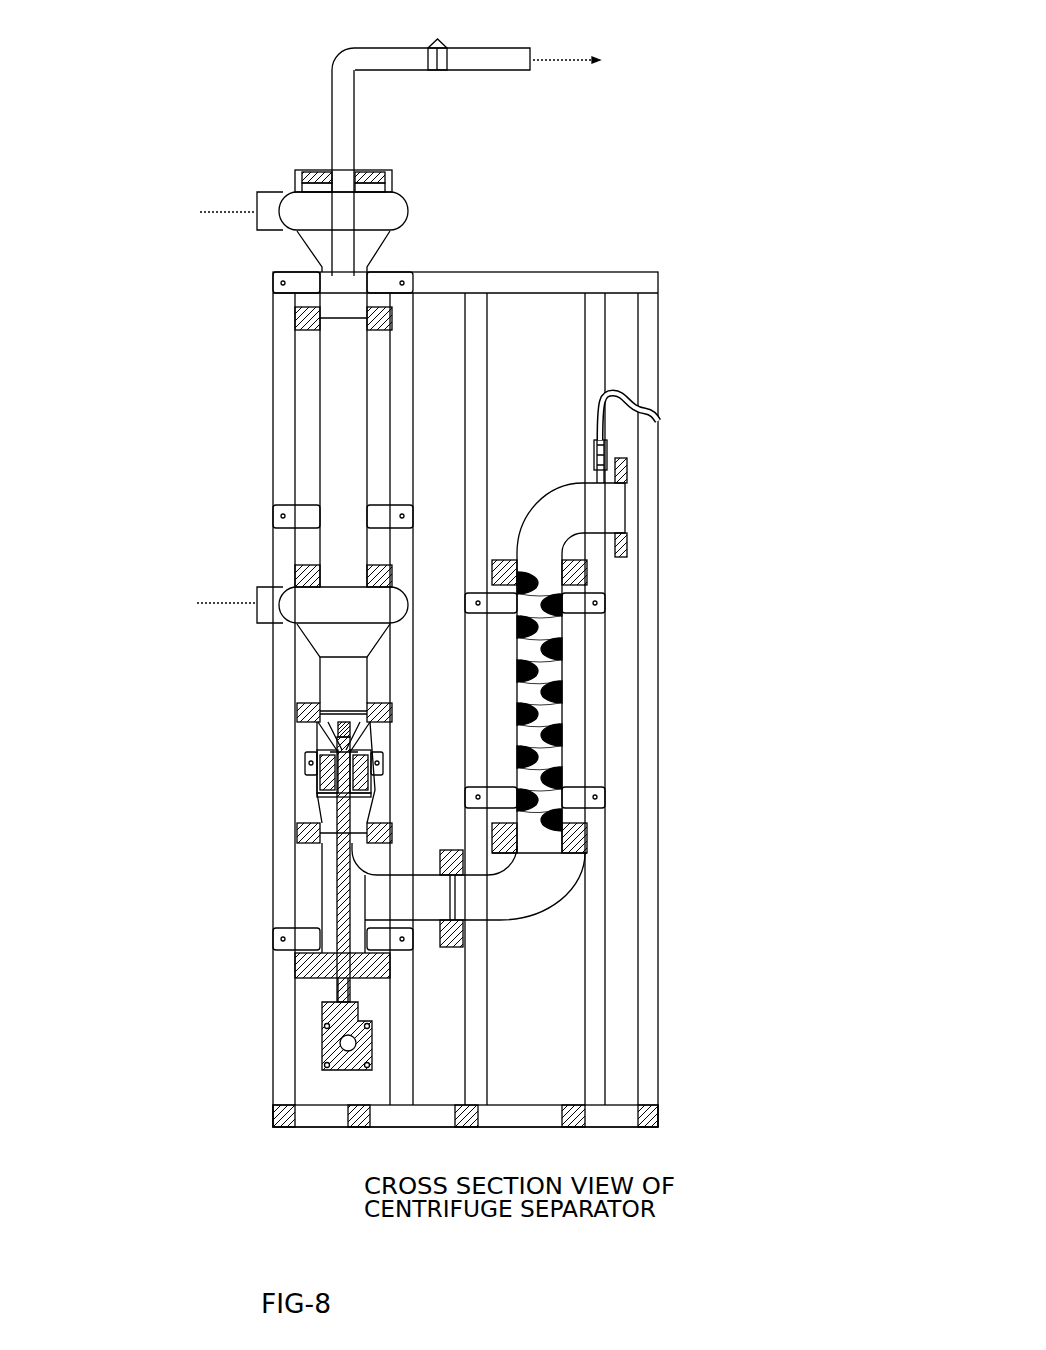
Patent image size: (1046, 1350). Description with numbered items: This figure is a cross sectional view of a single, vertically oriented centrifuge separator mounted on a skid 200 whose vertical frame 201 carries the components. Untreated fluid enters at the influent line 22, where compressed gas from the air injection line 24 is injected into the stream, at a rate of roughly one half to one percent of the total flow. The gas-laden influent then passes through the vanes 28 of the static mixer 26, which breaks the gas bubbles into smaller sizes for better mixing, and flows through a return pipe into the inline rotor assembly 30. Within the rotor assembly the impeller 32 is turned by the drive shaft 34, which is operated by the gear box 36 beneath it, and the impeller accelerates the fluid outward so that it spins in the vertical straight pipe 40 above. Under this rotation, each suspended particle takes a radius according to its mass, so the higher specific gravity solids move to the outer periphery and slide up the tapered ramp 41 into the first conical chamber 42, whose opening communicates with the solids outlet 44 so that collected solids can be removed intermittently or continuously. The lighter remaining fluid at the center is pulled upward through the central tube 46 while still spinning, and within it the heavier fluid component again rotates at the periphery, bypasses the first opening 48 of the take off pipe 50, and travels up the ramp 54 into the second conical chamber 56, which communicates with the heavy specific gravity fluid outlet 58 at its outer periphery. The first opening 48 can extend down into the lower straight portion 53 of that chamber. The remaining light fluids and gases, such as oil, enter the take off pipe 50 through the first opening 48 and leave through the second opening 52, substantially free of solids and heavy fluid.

The influent line 22 is at (640, 508).
The air injection line 24 is at (653, 402).
The static mixer 26 is at (575, 668).
The vanes 28 is at (565, 655).
The rotor assembly 30 is at (302, 807).
The impeller 32 is at (320, 732).
The drive shaft 34 is at (325, 866).
The gear box 36 is at (315, 1051).
The straight pipe 40 is at (347, 682).
The ramp 41 is at (320, 655).
The first conical chamber 42 is at (313, 605).
The solids outlet 44 is at (257, 587).
The central tube 46 is at (320, 405).
The first opening 48 is at (345, 278).
The take off pipe 50 is at (355, 118).
The second opening 52 is at (530, 48).
The lower straight portion 53 is at (338, 303).
The ramp 54 is at (313, 242).
The second conical chamber 56 is at (280, 191).
The heavy specific gravity fluid outlet 58 is at (258, 192).
The skid 200 is at (654, 1123).
The frame 201 is at (649, 1012).